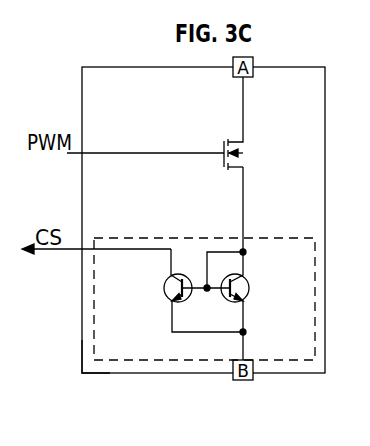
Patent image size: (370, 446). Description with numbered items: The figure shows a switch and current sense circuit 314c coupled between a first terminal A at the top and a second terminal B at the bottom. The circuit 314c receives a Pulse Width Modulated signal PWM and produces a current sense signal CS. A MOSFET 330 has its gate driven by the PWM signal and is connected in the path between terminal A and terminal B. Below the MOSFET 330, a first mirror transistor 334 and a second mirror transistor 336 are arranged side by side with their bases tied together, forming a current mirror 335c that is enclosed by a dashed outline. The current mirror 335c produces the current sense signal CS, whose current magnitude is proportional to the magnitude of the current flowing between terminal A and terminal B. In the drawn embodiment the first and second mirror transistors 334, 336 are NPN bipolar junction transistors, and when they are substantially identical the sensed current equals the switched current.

The MOSFET 330 is at (222, 144).
The current mirror 335c is at (186, 236).
The first mirror transistor 334 is at (164, 296).
The second mirror transistor 336 is at (250, 297).
The switch and current sense circuit 314c is at (80, 345).